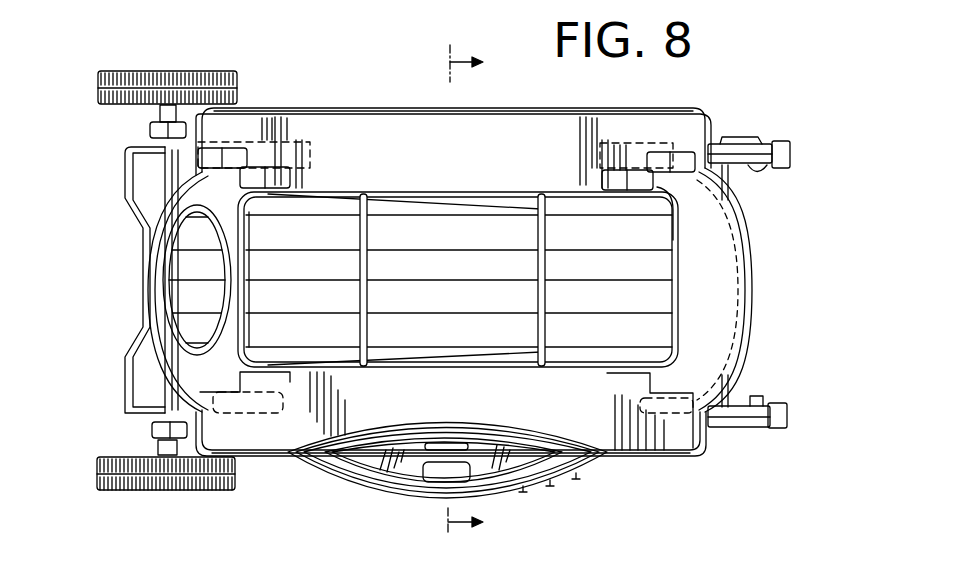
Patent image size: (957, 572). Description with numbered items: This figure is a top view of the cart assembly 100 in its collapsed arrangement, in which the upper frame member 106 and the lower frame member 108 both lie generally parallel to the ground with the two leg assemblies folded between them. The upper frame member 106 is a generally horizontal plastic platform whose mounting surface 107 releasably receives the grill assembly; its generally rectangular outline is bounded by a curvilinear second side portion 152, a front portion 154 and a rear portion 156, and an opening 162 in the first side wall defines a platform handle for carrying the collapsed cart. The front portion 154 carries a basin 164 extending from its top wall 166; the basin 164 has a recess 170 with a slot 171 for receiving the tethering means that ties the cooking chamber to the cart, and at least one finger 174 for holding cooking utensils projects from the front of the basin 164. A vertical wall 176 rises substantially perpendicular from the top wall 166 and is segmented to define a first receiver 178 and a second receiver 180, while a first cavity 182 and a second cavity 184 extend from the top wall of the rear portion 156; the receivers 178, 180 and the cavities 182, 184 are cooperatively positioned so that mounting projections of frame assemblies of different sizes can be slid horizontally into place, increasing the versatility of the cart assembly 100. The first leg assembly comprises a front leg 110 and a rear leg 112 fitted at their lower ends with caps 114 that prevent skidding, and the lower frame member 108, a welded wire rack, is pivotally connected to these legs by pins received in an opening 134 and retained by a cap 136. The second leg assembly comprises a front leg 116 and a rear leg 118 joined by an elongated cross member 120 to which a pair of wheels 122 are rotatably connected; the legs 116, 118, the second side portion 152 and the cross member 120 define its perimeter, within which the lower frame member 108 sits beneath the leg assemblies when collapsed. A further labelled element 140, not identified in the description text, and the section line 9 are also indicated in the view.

The cart assembly 100 is at (798, 102).
The upper frame member 106 is at (514, 162).
The mounting surface 107 is at (560, 148).
The lower frame member 108 is at (448, 260).
The front leg 110 is at (735, 413).
The rear leg 112 is at (742, 157).
The cap 114 is at (785, 162).
The front leg 116 is at (152, 428).
The rear leg 118 is at (152, 130).
The cross member 120 is at (168, 166).
The wheels 122 is at (238, 89).
The opening 134 is at (729, 184).
The cap 136 is at (770, 396).
The frame 140 is at (163, 243).
The second side portion 152 is at (192, 367).
The front portion 154 is at (438, 400).
The rear portion 156 is at (415, 160).
The opening 162 is at (198, 265).
The basin 164 is at (323, 468).
The top wall 166 is at (262, 445).
The recess 170 is at (404, 467).
The slot 171 is at (455, 476).
The finger 174 is at (550, 490).
The vertical wall 176 is at (307, 384).
The first receiver 178 is at (215, 396).
The second receiver 180 is at (273, 392).
The first cavity 182 is at (232, 162).
The second cavity 184 is at (277, 178).
The section line 9 is at (452, 289).